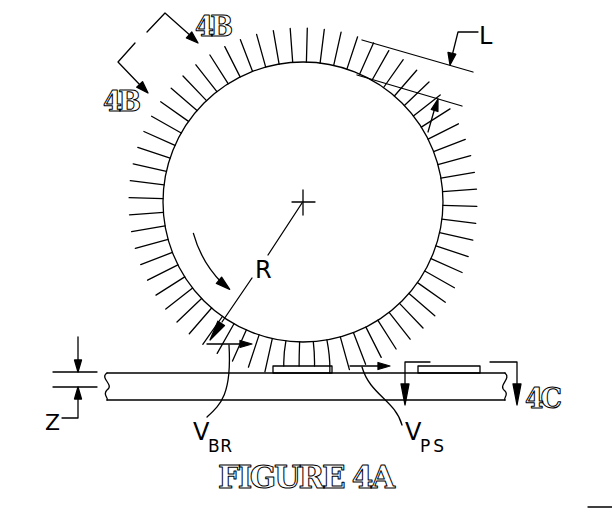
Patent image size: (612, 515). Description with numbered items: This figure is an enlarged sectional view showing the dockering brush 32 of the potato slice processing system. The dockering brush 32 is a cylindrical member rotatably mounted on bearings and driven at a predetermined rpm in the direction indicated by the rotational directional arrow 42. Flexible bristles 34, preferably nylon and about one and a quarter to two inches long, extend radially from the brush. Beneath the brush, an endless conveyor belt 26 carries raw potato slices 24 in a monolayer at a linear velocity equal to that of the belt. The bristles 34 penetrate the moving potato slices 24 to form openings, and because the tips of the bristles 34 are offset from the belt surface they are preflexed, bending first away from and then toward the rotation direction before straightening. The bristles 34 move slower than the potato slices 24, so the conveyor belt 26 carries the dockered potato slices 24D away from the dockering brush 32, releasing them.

The raw potato slices 24 is at (283, 373).
The dockered potato slices 24D is at (460, 366).
The conveyor belt 26 is at (165, 390).
The dockering brush 32 is at (412, 158).
The flexible bristles 34 is at (155, 163).
The rotational directional arrow 42 is at (203, 250).